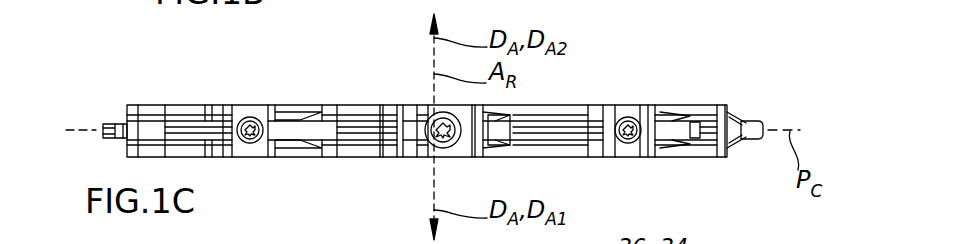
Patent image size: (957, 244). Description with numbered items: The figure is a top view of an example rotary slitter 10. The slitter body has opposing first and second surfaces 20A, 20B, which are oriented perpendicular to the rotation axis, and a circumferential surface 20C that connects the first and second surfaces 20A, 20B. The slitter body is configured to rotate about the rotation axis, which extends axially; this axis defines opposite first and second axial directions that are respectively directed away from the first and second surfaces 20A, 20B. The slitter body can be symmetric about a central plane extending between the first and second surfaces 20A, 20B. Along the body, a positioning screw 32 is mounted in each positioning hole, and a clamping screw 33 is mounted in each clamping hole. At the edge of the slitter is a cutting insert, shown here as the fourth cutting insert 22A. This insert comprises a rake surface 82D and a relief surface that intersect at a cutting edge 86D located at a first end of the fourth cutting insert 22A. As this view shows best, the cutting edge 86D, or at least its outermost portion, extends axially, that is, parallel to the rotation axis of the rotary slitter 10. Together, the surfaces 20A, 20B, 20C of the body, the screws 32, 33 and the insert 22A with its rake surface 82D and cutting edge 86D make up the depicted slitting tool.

The rotary slitter 10 is at (682, 51).
The first surface 20A is at (320, 161).
The second surface 20B is at (320, 99).
The circumferential surface 20C is at (90, 115).
The fourth cutting insert 22A is at (757, 112).
The positioning screw 32 is at (415, 158).
The clamping screw 33 is at (457, 135).
The rake surface 82D is at (752, 141).
The cutting edge 86D is at (763, 127).